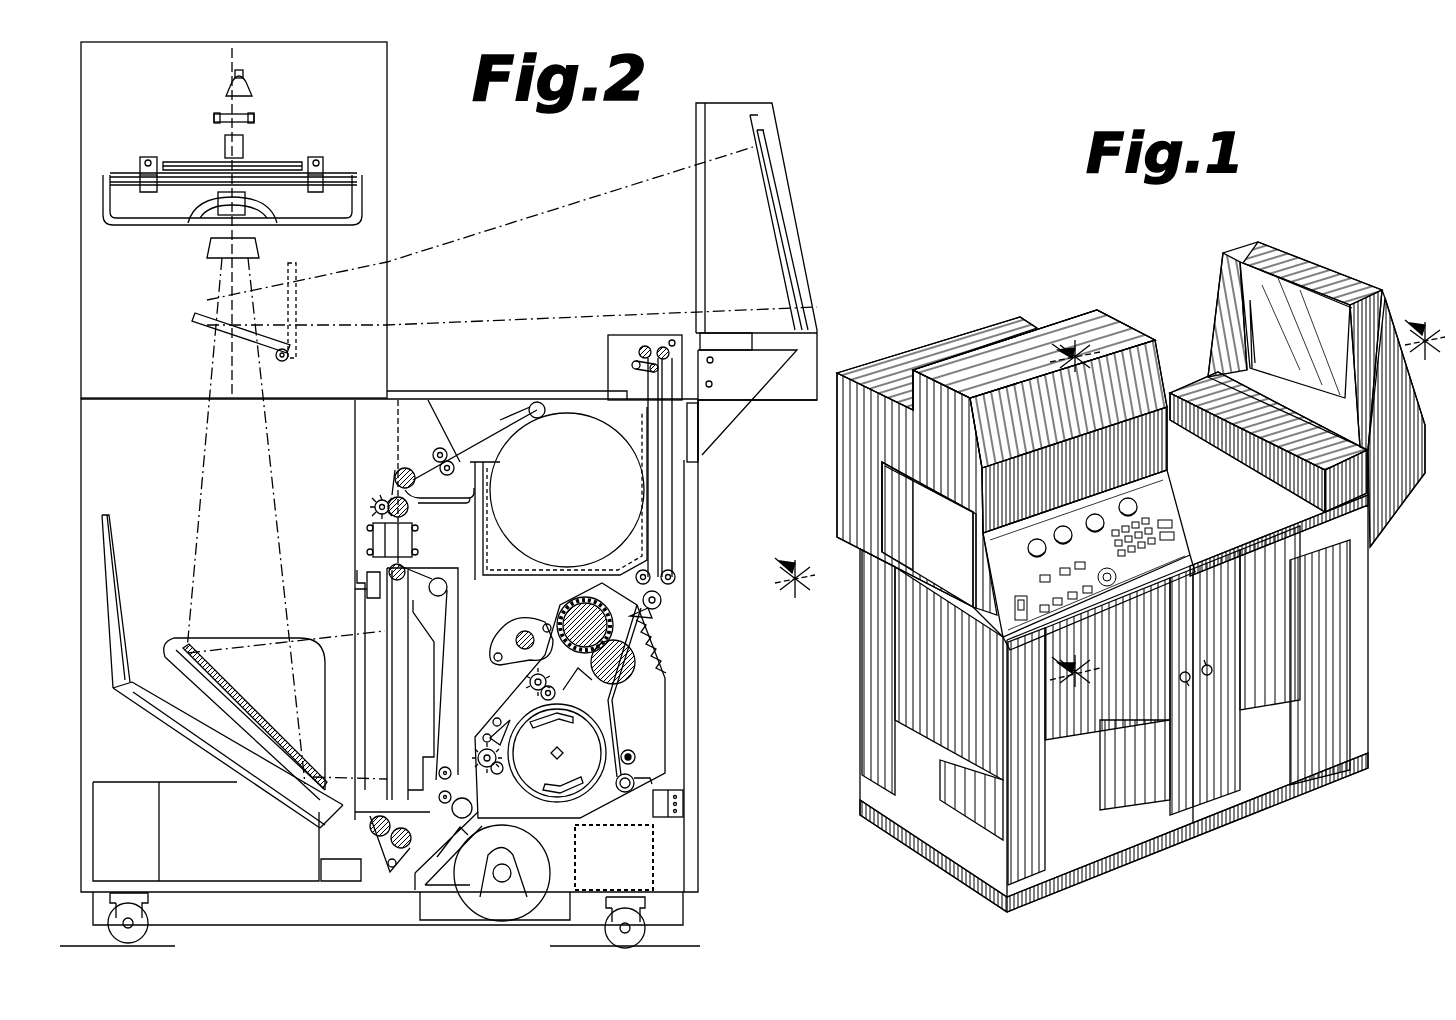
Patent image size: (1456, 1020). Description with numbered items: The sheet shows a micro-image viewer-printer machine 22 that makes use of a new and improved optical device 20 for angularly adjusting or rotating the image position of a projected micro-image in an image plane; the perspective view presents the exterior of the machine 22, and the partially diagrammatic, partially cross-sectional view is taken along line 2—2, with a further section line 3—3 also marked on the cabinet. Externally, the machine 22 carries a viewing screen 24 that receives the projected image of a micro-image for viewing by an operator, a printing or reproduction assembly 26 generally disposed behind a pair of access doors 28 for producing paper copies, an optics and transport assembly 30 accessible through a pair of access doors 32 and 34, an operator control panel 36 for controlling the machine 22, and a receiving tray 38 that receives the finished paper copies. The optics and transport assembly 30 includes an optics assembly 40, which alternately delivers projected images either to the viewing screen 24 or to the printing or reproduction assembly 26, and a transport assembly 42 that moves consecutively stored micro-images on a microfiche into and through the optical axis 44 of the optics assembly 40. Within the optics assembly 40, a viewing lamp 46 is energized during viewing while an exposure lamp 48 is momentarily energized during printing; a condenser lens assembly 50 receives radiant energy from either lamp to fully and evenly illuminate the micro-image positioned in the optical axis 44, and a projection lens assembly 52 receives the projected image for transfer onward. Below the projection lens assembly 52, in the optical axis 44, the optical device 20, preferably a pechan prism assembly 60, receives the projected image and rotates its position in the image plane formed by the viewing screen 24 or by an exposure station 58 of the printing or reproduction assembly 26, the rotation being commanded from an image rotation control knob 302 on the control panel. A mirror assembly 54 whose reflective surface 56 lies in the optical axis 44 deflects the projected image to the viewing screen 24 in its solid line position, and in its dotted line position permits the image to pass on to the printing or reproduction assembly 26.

In FIG. 2, the optical device 20 is at (160, 266).
In FIG. 2, the micro-image viewer-printer machine 22 is at (840, 72).
In FIG. 1, the micro-image viewer-printer machine 22 is at (1240, 197).
In FIG. 2, the viewing screen 24 is at (755, 200).
In FIG. 1, the viewing screen 24 is at (1307, 305).
In FIG. 2, the printing or reproduction assembly 26 is at (745, 710).
In FIG. 1, the printing or reproduction assembly 26 is at (1410, 632).
In FIG. 1, the access doors 28 is at (1270, 780).
In FIG. 2, the optics and transport assembly 30 is at (455, 146).
In FIG. 1, the optics and transport assembly 30 is at (1148, 255).
In FIG. 1, the access door 32 is at (1115, 430).
In FIG. 1, the access door 34 is at (915, 560).
In FIG. 1, the operator control panel 36 is at (1021, 570).
In FIG. 1, the receiving tray 38 is at (1268, 507).
In FIG. 2, the optics assembly 40 is at (308, 101).
In FIG. 2, the transport assembly 42 is at (362, 200).
In FIG. 2, the optical axis 44 is at (234, 126).
In FIG. 2, the viewing lamp 46 is at (232, 84).
In FIG. 2, the exposure lamp 48 is at (217, 116).
In FIG. 2, the condenser lens assembly 50 is at (225, 141).
In FIG. 2, the projection lens assembly 52 is at (224, 212).
In FIG. 2, the mirror assembly 54 is at (312, 356).
In FIG. 2, the reflective surface 56 is at (200, 315).
In FIG. 2, the exposure station 58 is at (377, 663).
In FIG. 2, the pechan prism assembly 60 is at (262, 252).
In FIG. 1, the image rotation control knob 302 is at (1140, 510).
In FIG. 1, the section line 2- 2 is at (1102, 441).
In FIG. 1, the section line 3- 3 is at (1077, 495).